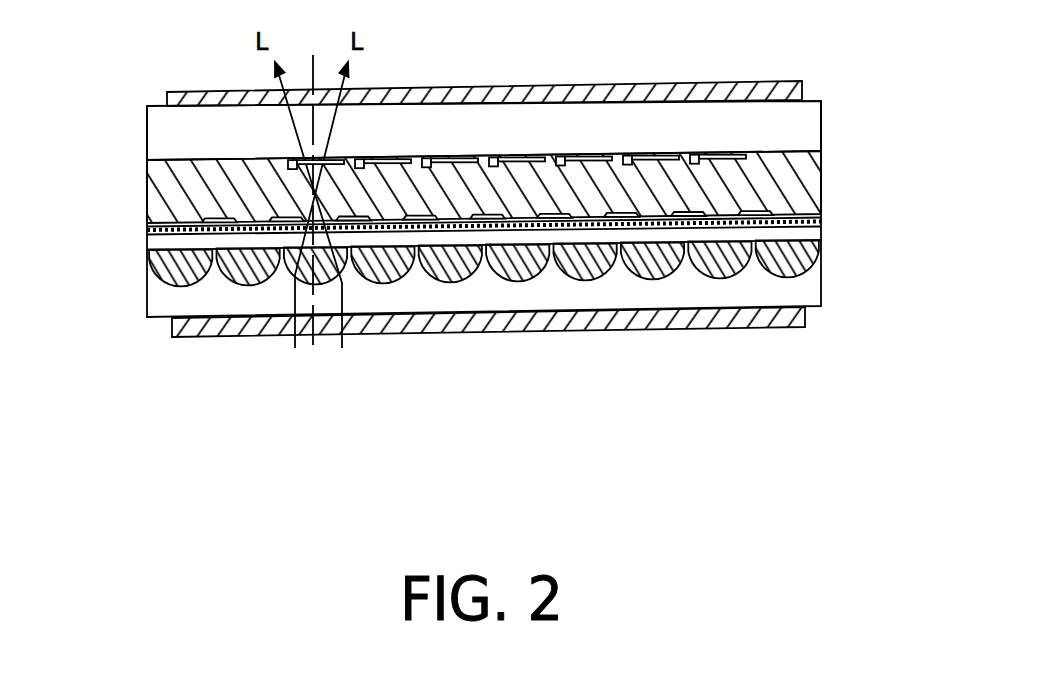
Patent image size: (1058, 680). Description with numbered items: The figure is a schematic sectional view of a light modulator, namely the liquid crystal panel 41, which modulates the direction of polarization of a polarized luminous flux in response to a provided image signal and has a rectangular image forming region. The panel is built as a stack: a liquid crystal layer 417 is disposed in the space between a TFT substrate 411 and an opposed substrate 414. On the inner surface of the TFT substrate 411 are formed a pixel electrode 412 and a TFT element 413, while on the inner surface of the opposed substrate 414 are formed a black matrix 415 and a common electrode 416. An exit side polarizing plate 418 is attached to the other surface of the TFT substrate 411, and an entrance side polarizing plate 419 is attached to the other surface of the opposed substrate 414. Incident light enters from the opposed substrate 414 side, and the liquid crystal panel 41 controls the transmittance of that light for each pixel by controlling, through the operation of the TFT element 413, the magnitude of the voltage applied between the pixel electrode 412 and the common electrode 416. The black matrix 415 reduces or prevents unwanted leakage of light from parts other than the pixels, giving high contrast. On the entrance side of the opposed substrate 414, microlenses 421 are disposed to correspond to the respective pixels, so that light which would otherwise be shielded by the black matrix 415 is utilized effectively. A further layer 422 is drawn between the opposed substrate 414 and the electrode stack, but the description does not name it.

The liquid crystal panel 41 is at (508, 477).
The TFT substrate 411 is at (822, 118).
The pixel electrode 412 is at (585, 158).
The TFT element 413 is at (488, 158).
The opposed substrate 414 is at (832, 227).
The black matrix 415 is at (822, 216).
The common electrode 416 is at (517, 219).
The liquid crystal layer 417 is at (152, 203).
The exit side polarizing plate 418 is at (167, 101).
The entrance side polarizing plate 419 is at (172, 327).
The microlens 421 is at (653, 282).
The adhesive layer 422 is at (163, 244).